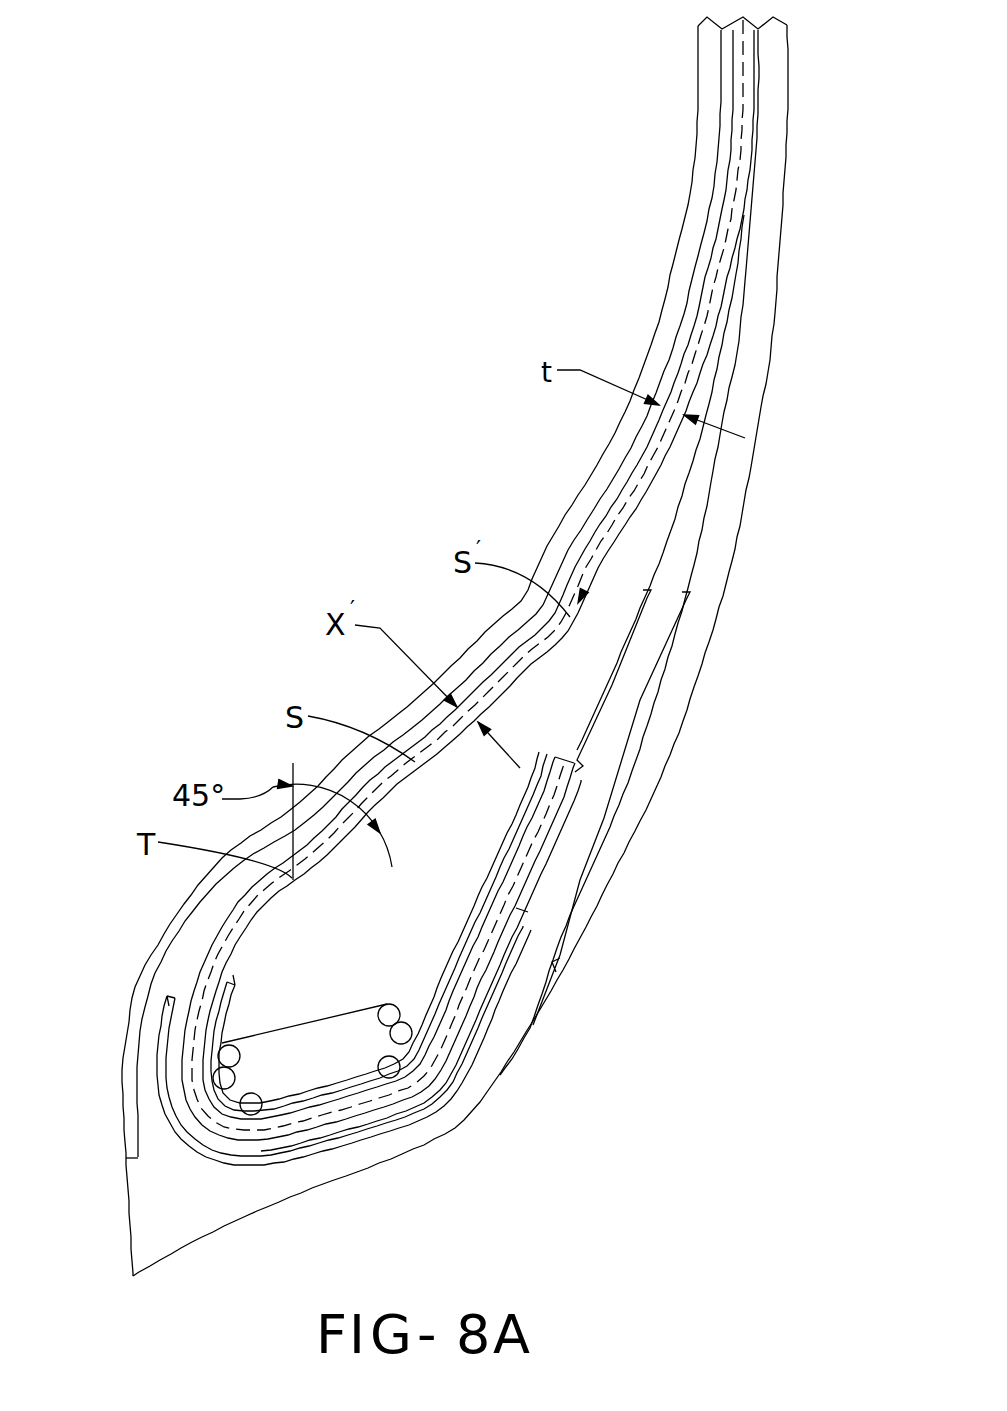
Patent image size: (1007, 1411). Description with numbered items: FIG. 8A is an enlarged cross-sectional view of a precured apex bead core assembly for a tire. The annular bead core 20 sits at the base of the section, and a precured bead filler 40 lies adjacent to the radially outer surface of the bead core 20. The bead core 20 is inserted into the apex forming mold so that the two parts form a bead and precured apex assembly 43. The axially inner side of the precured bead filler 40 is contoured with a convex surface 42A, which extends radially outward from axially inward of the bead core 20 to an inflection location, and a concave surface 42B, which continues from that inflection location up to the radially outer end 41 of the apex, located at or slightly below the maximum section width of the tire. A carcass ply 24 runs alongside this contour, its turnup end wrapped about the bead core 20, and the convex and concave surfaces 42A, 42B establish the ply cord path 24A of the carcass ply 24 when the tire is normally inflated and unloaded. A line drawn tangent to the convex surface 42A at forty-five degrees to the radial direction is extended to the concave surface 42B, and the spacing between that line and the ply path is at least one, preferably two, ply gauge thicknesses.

The bead core 20 is at (310, 1067).
The carcass ply 24 is at (704, 312).
The ply cord path 24A is at (709, 216).
The precured bead filler 40 is at (560, 700).
The radially outer end 41 is at (743, 210).
The convex surface 42A is at (250, 922).
The concave surface 42B is at (640, 515).
The bead and precured apex assembly 43 is at (443, 923).